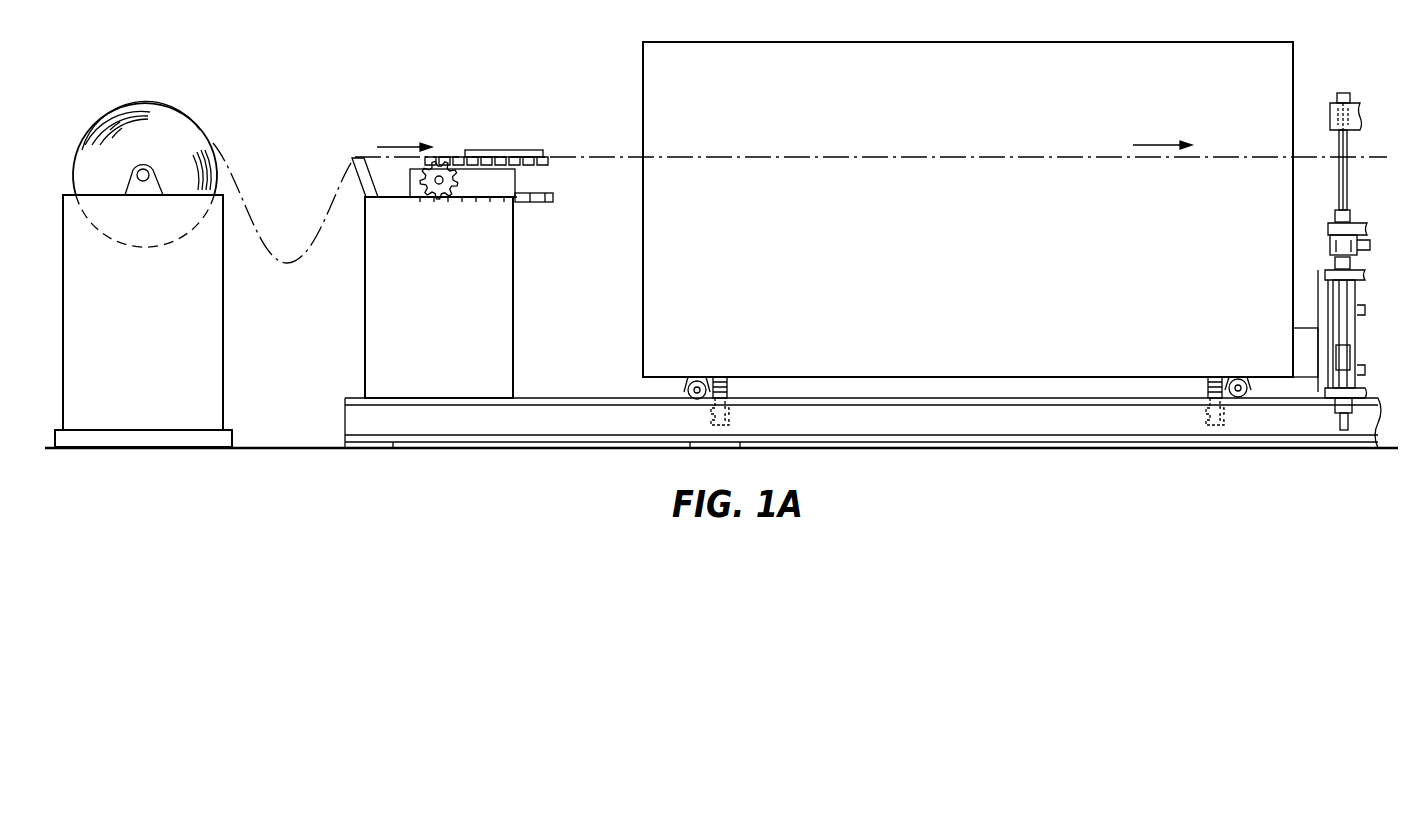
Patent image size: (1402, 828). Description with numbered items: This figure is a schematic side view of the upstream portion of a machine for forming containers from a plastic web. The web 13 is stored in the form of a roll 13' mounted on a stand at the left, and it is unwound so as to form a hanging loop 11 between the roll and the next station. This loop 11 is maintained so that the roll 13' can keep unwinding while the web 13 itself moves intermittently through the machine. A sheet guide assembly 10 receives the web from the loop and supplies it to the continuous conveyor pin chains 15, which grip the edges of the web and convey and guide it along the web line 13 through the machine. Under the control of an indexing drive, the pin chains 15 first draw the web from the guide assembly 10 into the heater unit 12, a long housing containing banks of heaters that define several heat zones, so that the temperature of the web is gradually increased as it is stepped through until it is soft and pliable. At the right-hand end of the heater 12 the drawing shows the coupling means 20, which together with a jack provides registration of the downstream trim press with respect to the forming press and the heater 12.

The roll 13' is at (145, 162).
The loop 11 is at (306, 258).
The sheet guide assembly 10 is at (468, 53).
The continuous conveyor pin chains 15 is at (543, 205).
The heater unit 12 is at (1015, 105).
The web 13 is at (871, 186).
The coupling 20 is at (1305, 378).